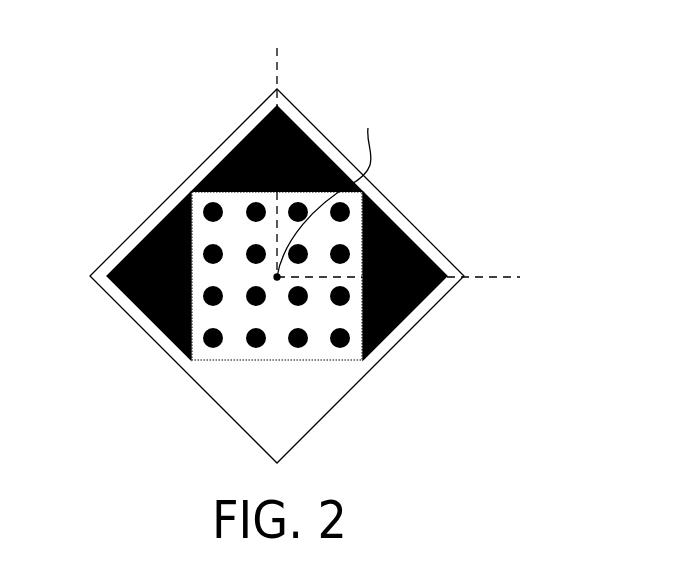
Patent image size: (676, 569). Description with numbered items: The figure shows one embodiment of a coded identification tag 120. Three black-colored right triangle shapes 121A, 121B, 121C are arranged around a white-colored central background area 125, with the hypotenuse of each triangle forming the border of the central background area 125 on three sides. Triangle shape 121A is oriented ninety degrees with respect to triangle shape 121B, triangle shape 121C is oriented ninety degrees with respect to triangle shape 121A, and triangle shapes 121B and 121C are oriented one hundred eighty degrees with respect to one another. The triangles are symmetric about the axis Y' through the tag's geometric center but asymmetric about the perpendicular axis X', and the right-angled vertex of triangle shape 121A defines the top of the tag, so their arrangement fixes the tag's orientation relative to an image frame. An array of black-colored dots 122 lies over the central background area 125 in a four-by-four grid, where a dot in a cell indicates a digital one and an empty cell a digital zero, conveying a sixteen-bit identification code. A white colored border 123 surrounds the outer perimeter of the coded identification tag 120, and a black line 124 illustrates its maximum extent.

The coded identification tag 120 is at (160, 47).
The triangle shape 121A is at (284, 118).
The triangle shape 121B is at (142, 242).
The triangle shape 121C is at (398, 225).
The array of black-colored dots 122 is at (362, 360).
The white colored border 123 is at (423, 305).
The black line 124 is at (345, 396).
The white-colored central background area 125 is at (226, 316).